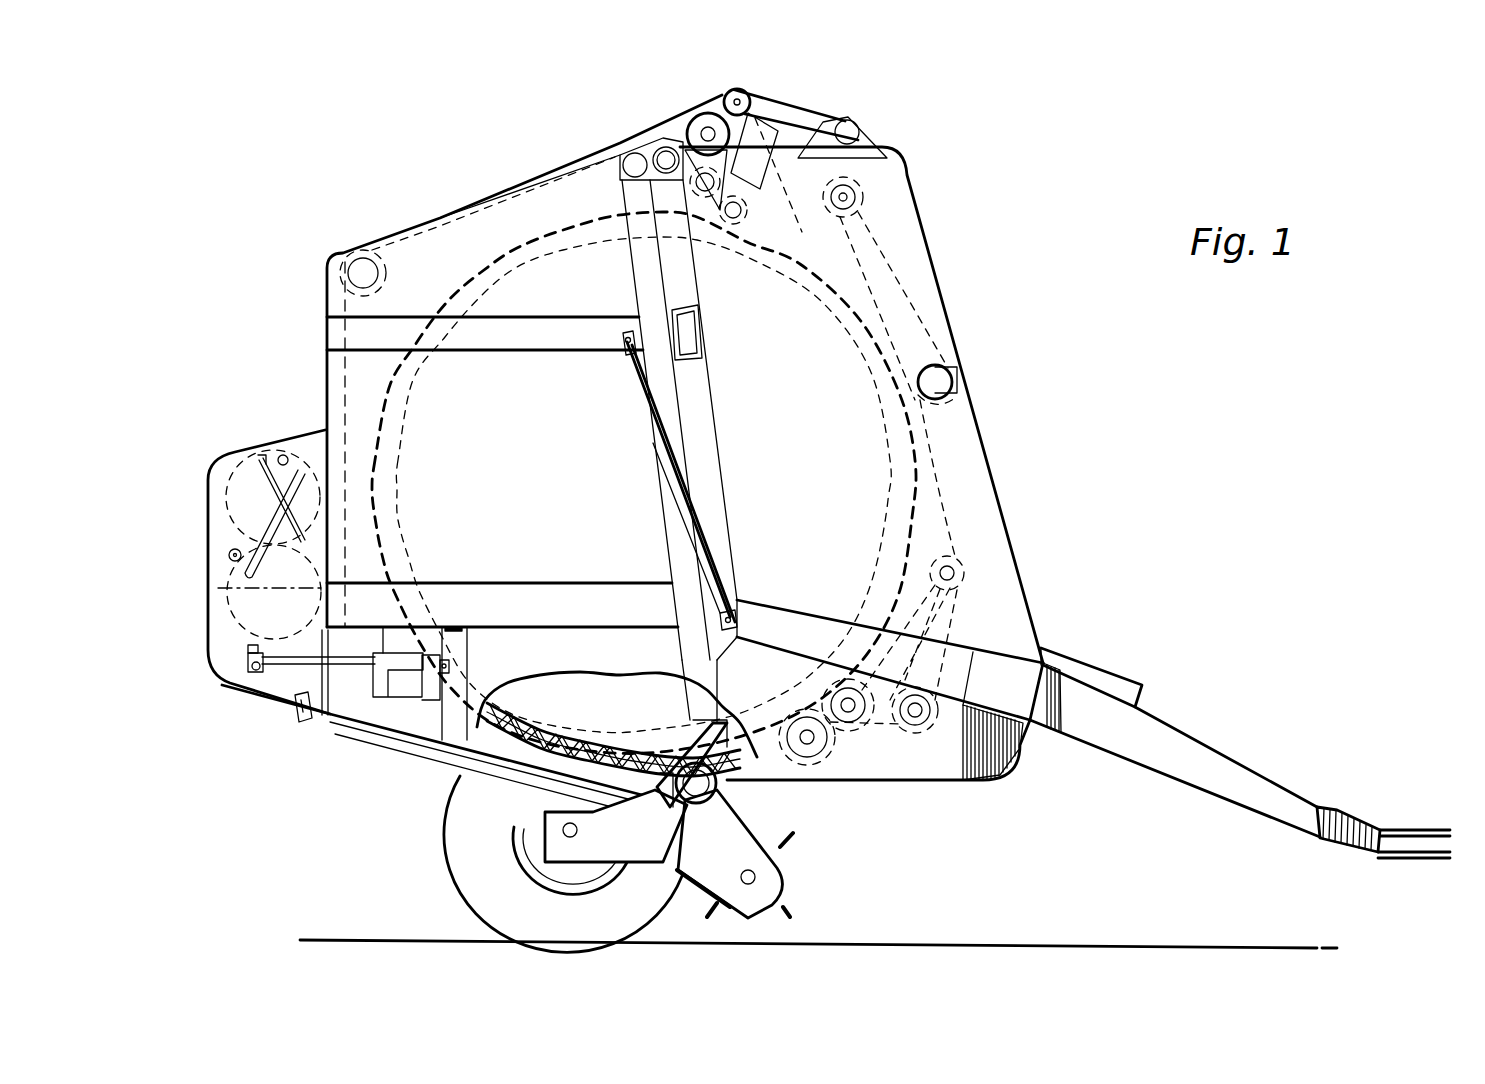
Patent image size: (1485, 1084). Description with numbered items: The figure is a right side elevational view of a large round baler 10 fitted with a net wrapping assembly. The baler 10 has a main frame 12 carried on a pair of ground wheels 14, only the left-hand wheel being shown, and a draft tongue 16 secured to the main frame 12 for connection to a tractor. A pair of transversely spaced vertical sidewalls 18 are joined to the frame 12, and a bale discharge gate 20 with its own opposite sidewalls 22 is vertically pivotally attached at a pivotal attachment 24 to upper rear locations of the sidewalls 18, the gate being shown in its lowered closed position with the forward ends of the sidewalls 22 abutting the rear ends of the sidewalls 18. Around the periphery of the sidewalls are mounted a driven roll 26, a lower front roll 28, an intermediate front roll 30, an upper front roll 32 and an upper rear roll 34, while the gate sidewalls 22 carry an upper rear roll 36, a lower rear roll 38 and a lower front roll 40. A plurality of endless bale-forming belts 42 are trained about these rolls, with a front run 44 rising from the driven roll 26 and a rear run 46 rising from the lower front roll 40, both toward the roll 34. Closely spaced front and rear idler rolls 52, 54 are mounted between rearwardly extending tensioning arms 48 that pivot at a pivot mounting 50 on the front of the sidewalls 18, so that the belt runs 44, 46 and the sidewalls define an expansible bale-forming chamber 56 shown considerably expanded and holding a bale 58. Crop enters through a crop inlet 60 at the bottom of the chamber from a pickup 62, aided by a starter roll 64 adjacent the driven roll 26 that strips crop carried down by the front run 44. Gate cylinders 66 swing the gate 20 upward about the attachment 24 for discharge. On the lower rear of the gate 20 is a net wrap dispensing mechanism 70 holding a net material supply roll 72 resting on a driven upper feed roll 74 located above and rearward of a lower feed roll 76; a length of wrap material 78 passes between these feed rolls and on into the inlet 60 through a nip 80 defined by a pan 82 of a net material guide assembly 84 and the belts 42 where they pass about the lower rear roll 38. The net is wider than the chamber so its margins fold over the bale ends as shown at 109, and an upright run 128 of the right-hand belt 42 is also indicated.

The baler 10 is at (993, 257).
The main frame 12 is at (1010, 705).
The ground wheels 14 is at (467, 900).
The draft tongue 16 is at (1176, 730).
The sidewalls 18 is at (790, 507).
The bale discharge gate 20 is at (326, 291).
The gate sidewalls 22 is at (548, 436).
The pivotal attachment 24 is at (626, 170).
The driven roll 26 is at (848, 738).
The lower front roll 28 is at (910, 735).
The intermediate front roll 30 is at (967, 566).
The upper front roll 32 is at (866, 197).
The upper rear roll 34 is at (725, 100).
The upper rear roll 36 is at (381, 273).
The lower rear roll 38 is at (378, 742).
The lower front roll 40 is at (717, 808).
The bale-forming belts 42 is at (940, 472).
The front run 44 is at (915, 460).
The rear run 46 is at (376, 463).
The tensioning arms 48 is at (915, 303).
The pivot mounting of tensioning arms 50 is at (958, 378).
The front idler roll 52 is at (742, 222).
The rear idler roll 54 is at (690, 130).
The bale-forming chamber 56 is at (640, 714).
The bale 58 is at (492, 765).
The crop inlet 60 is at (747, 773).
The pickup 62 is at (790, 875).
The starter roll 64 is at (832, 777).
The gate cylinders 66 is at (672, 473).
The net wrap dispensing mechanism 70 is at (198, 529).
The net material supply roll 72 is at (228, 560).
The upper net material feed roll 74 is at (271, 544).
The lower feed roll 76 is at (245, 685).
The length of wrap material 78 is at (338, 628).
The nip 80 is at (300, 695).
The pan 82 is at (323, 733).
The net material guide assembly 84 is at (445, 765).
The folded net marginal portions 109 is at (570, 697).
The upright run of belt 128 is at (345, 390).